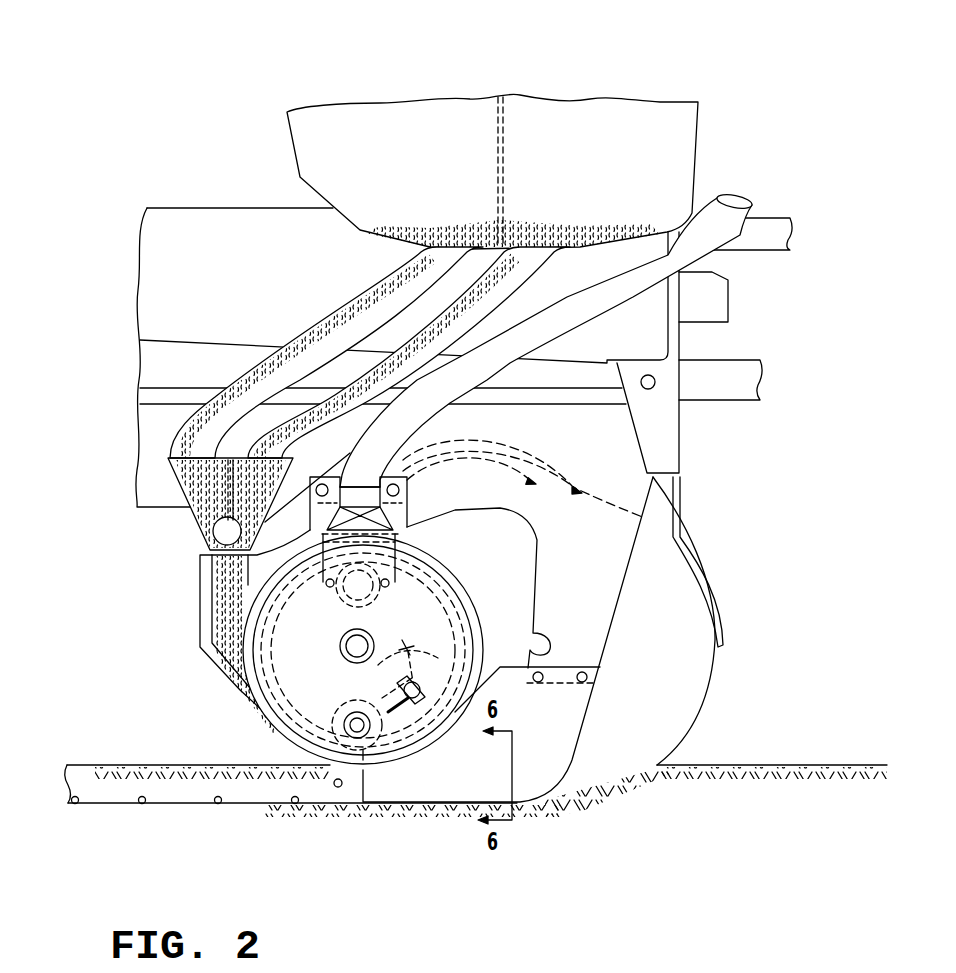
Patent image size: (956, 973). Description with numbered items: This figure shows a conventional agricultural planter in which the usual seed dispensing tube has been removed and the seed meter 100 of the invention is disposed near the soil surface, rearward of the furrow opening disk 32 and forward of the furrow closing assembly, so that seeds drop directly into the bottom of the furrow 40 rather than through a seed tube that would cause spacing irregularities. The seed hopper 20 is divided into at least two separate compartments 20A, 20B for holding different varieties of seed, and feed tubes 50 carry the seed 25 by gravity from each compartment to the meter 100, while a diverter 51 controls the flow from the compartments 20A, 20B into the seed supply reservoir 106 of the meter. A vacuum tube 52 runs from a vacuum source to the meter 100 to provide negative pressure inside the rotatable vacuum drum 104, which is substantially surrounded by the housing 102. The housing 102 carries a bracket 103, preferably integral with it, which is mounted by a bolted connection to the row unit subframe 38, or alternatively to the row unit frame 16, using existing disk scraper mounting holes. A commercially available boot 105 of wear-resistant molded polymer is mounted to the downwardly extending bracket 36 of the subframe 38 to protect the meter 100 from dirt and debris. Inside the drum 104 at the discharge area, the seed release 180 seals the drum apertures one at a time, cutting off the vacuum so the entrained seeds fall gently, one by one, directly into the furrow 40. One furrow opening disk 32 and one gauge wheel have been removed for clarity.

The row unit frame 16 is at (178, 276).
The seed hopper 20 is at (489, 133).
The first hopper compartment 20A is at (400, 166).
The second hopper compartment 20B is at (618, 166).
The seed 25 is at (387, 368).
The furrow opening disk 32 is at (690, 682).
The downwardly extending bracket 36 is at (592, 576).
The row unit subframe 38 is at (594, 451).
The furrow 40 is at (238, 797).
The feed tubes 50 is at (403, 340).
The diverter 51 is at (185, 525).
The vacuum tube 52 is at (741, 205).
The seed meter 100 is at (288, 620).
The housing 102 is at (212, 637).
The bracket 103 is at (415, 452).
The rotatable vacuum drum 104 is at (263, 727).
The boot 105 is at (574, 739).
The seed supply reservoir 106 is at (225, 598).
The seed release 180 is at (382, 698).